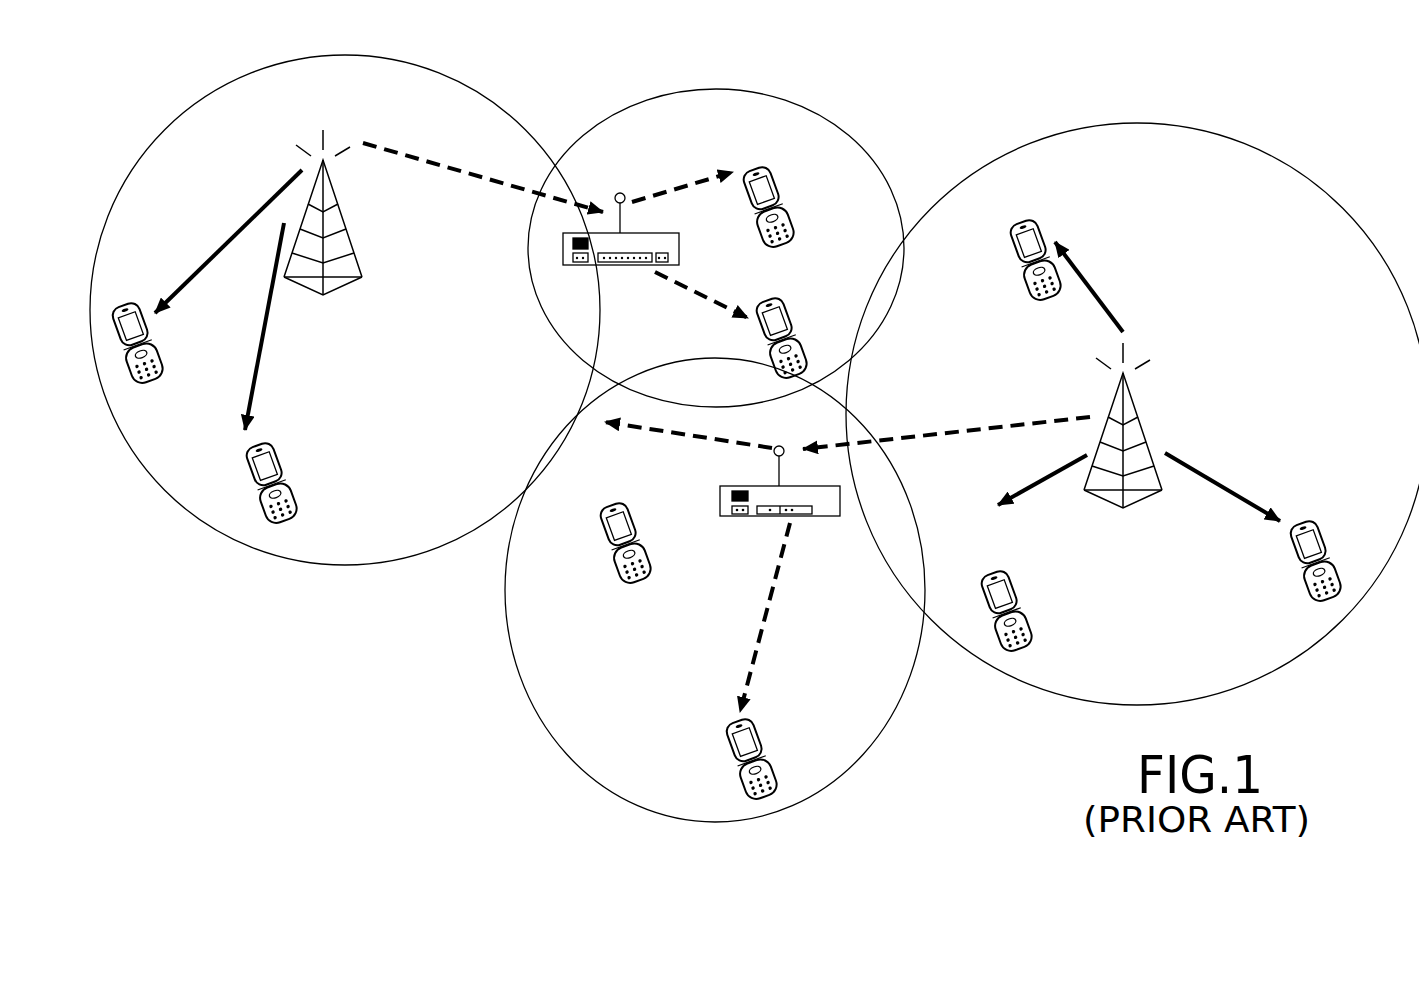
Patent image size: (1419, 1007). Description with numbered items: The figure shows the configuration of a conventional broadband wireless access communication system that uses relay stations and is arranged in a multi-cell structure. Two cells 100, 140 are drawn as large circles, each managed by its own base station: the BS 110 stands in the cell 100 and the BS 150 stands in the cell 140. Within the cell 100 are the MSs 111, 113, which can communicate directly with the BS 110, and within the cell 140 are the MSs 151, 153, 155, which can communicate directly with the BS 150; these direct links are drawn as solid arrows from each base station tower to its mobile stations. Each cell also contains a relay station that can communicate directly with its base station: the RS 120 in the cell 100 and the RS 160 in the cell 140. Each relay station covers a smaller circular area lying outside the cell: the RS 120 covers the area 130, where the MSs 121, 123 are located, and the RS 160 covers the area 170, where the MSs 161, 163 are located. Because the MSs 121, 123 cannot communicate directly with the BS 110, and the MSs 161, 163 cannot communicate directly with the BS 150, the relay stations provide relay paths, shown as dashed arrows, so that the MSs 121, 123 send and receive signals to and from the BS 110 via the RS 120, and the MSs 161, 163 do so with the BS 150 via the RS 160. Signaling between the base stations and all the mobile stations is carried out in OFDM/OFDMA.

The cell 100 is at (345, 310).
The BS 110 is at (345, 215).
The MS 111 is at (126, 300).
The MS 113 is at (260, 442).
The RS 120 is at (590, 266).
The MS 121 is at (772, 300).
The MS 123 is at (752, 170).
The area 130 is at (716, 248).
The cell 140 is at (1132, 414).
The BS 150 is at (1143, 428).
The MS 151 is at (1024, 216).
The MS 153 is at (1303, 518).
The MS 155 is at (992, 568).
The RS 160 is at (727, 517).
The MS 161 is at (614, 503).
The MS 163 is at (742, 718).
The area 170 is at (715, 590).